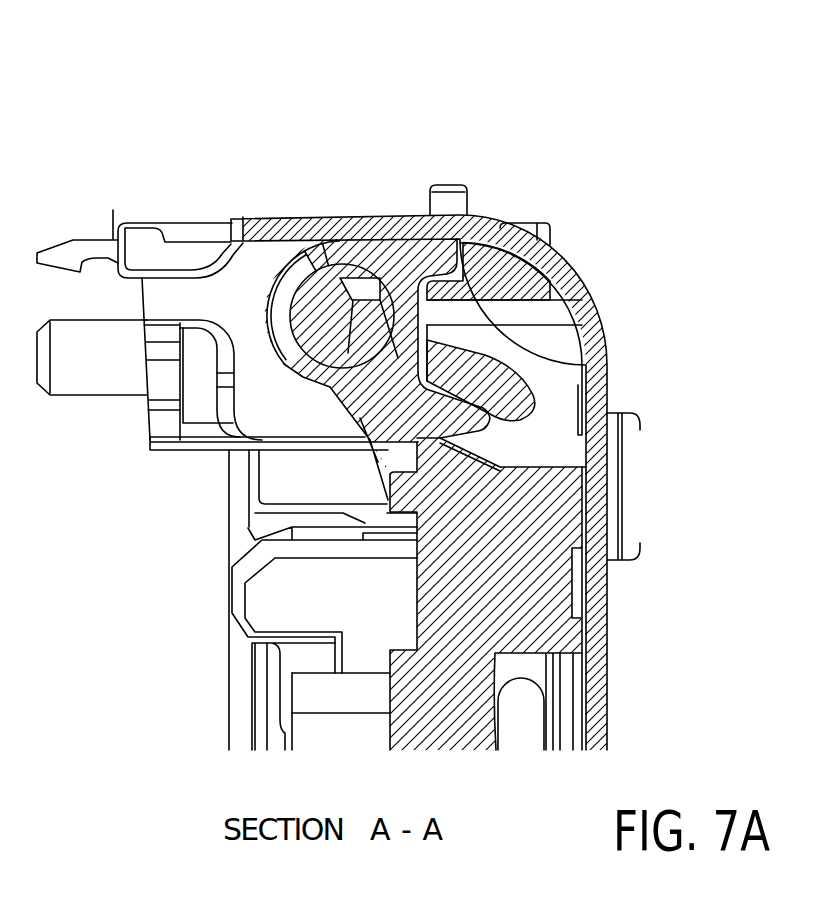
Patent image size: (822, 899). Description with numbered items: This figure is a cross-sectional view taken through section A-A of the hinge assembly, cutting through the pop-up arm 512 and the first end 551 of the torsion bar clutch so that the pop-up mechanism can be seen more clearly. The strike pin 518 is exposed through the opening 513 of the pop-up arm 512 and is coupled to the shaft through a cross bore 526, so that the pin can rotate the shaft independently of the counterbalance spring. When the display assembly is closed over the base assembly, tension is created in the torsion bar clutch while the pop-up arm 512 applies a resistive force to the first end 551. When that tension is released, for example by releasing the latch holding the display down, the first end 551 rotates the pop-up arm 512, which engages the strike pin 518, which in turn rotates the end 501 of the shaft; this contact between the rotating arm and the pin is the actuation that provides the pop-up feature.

The end of shaft 501 is at (303, 293).
The pop-up arm 512 is at (383, 253).
The opening 513 is at (277, 312).
The strike pin 518 is at (337, 307).
The cross bore 526 is at (367, 280).
The first end of torsion bar clutch 551 is at (527, 400).